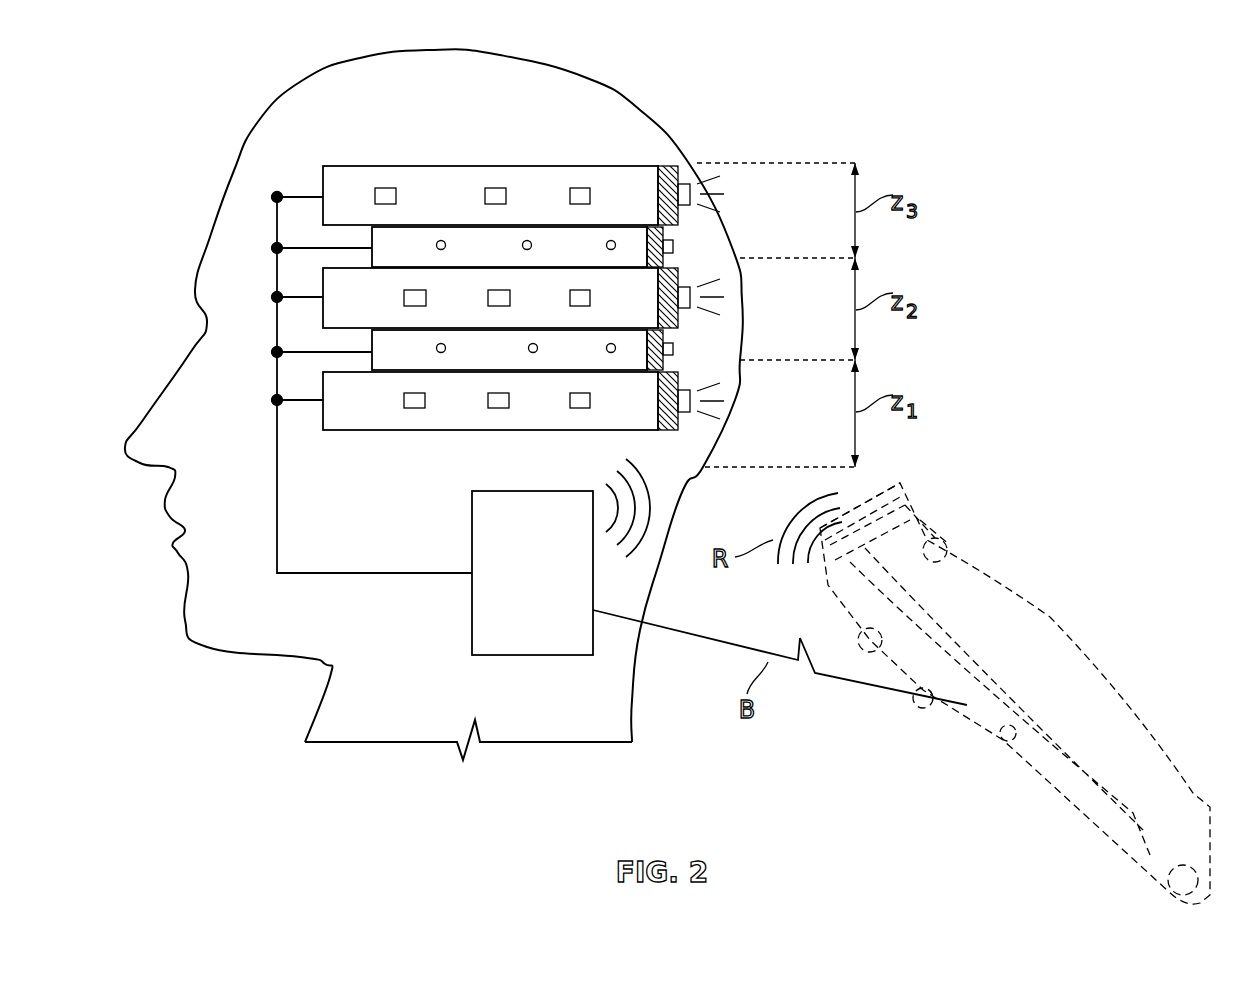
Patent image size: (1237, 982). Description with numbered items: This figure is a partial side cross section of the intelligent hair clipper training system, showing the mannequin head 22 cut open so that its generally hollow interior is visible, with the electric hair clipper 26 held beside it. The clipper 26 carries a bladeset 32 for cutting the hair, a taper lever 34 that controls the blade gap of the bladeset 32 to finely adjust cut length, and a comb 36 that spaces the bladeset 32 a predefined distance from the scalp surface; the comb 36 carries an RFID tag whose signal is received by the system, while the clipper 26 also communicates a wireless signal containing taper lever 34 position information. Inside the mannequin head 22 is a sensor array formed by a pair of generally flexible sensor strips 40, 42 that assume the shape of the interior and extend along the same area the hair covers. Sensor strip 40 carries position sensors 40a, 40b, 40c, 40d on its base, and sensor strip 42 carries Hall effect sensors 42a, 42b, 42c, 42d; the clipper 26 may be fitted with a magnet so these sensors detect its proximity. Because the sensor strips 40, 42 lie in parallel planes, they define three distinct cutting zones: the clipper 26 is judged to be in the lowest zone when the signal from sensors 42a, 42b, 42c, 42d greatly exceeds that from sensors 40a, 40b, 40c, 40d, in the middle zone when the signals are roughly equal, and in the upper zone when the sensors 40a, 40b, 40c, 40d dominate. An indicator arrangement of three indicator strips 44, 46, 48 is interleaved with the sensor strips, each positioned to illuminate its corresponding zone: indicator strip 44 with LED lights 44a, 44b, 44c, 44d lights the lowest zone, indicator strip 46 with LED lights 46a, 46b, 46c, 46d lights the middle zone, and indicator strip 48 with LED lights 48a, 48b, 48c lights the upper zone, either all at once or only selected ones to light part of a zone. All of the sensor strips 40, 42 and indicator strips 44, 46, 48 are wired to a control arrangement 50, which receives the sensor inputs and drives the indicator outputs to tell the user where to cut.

The mannequin head 22 is at (584, 77).
The electric hair clipper 26 is at (1050, 633).
The bladeset 32 is at (920, 520).
The taper lever 34 is at (920, 708).
The comb 36 is at (902, 486).
The sensor strip 40 is at (373, 229).
The position sensor 40a is at (441, 240).
The position sensor 40b is at (527, 240).
The position sensor 40c is at (611, 240).
The position sensor 40d is at (675, 247).
The sensor strip 42 is at (373, 363).
The Hall effect sensor 42a is at (441, 343).
The Hall effect sensor 42b is at (533, 343).
The Hall effect sensor 42c is at (611, 343).
The Hall effect sensor 42d is at (675, 349).
The indicator strip 44 is at (350, 418).
The LED light 44a is at (413, 393).
The LED light 44b is at (498, 393).
The LED light 44c is at (580, 393).
The LED light 44d is at (690, 400).
The indicator strip 46 is at (335, 304).
The LED light 46a is at (413, 290).
The LED light 46b is at (498, 290).
The LED light 46c is at (580, 290).
The LED light 46d is at (690, 293).
The indicator strip 48 is at (345, 184).
The LED light 48a is at (387, 188).
The LED light 48b is at (496, 188).
The LED light 48c is at (582, 188).
The control arrangement 50 is at (532, 656).